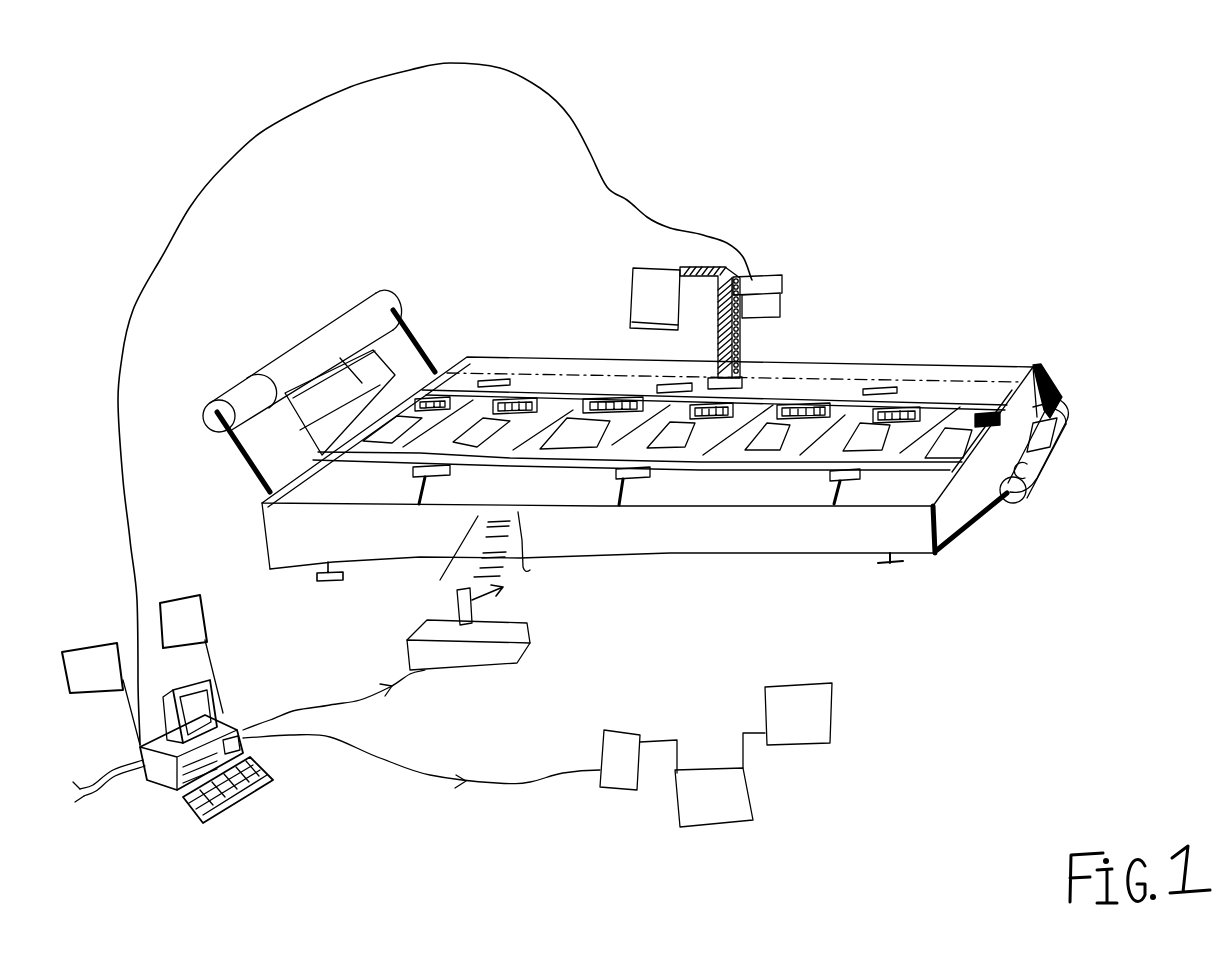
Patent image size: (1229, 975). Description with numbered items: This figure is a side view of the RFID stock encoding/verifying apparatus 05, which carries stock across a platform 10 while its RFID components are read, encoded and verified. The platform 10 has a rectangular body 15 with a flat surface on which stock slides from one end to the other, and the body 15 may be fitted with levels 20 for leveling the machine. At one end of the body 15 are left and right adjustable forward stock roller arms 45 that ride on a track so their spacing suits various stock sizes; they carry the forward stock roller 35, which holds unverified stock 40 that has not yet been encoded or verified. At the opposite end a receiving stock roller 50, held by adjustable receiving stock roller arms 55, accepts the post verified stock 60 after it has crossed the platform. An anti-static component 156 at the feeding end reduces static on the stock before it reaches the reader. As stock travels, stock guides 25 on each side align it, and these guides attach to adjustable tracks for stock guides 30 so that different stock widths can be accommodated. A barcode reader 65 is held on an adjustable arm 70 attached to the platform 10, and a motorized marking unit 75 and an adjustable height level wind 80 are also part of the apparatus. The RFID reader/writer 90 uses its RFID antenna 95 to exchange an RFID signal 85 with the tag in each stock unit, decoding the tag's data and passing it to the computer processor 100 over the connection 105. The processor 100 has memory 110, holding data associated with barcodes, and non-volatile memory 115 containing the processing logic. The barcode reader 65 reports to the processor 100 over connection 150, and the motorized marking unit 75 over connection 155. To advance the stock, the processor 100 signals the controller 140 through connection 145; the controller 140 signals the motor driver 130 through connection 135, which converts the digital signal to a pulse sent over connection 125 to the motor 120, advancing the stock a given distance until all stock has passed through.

The RFID stock encoding/verifying apparatus 05 is at (905, 137).
The platform 10 is at (680, 472).
The body 15 is at (840, 565).
The levels 20 is at (344, 577).
The stock guides 25 is at (950, 392).
The adjustable tracks for stock guides 30 is at (500, 378).
The forward stock roller 35 is at (1067, 417).
The unverified stock 40 is at (1048, 468).
The adjustable forward stock roller arms 45 is at (1047, 390).
The receiving stock roller 50 is at (372, 294).
The adjustable receiving stock roller arms 55 is at (412, 338).
The post verified stock 60 is at (307, 336).
The barcode reader 65 is at (670, 280).
The adjustable arm 70 is at (713, 238).
The motorized marking unit 75 is at (760, 280).
The adjustable height level wind 80 is at (742, 342).
The RFID signal 85 is at (520, 571).
The RFID reader/writer 90 is at (530, 640).
The RFID antenna 95 is at (455, 602).
The computer processor 100 is at (163, 790).
The connection between RFID reader/writer and processor 105 is at (352, 703).
The memory 110 is at (183, 595).
The non-volatile memory 115 is at (83, 650).
The motor 120 is at (810, 723).
The connection between motor and motor driver 125 is at (740, 733).
The motor driver 130 is at (743, 807).
The connection between motor driver and controller 135 is at (667, 740).
The controller 140 is at (622, 780).
The connection between controller and processor 145 is at (500, 783).
The connection between barcode scanner and processor 150 is at (560, 97).
The connection between motorized marker and processor 155 is at (702, 268).
The anti-static component 156 is at (997, 500).